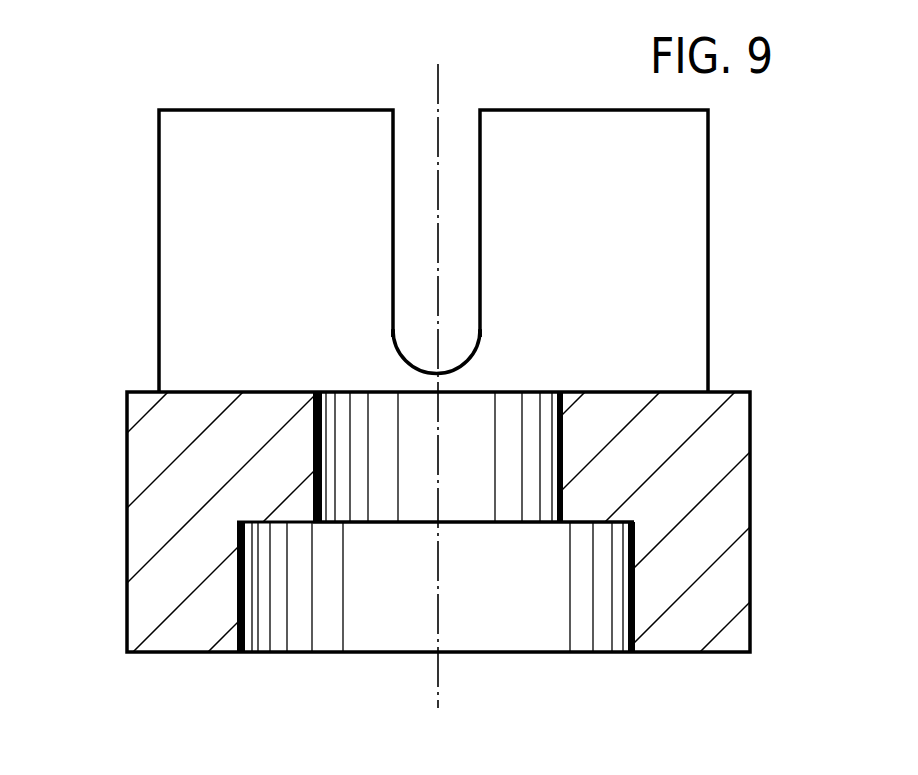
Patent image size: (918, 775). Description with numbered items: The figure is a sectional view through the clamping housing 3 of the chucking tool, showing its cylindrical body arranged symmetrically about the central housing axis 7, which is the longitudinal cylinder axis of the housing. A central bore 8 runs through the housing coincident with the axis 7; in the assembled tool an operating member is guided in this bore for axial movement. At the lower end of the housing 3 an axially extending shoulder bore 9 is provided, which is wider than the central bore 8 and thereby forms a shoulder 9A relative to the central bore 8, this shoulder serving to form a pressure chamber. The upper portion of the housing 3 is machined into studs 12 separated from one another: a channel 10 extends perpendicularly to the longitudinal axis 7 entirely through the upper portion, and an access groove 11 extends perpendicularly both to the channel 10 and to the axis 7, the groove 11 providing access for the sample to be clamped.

The clamping housing 3 is at (134, 348).
The central housing axis 7 is at (441, 263).
The central bore 8 is at (513, 465).
The shoulder bore 9 is at (553, 593).
The shoulder 9A is at (612, 522).
The channel 10 is at (256, 392).
The access groove 11 is at (424, 182).
The studs 12 is at (261, 148).